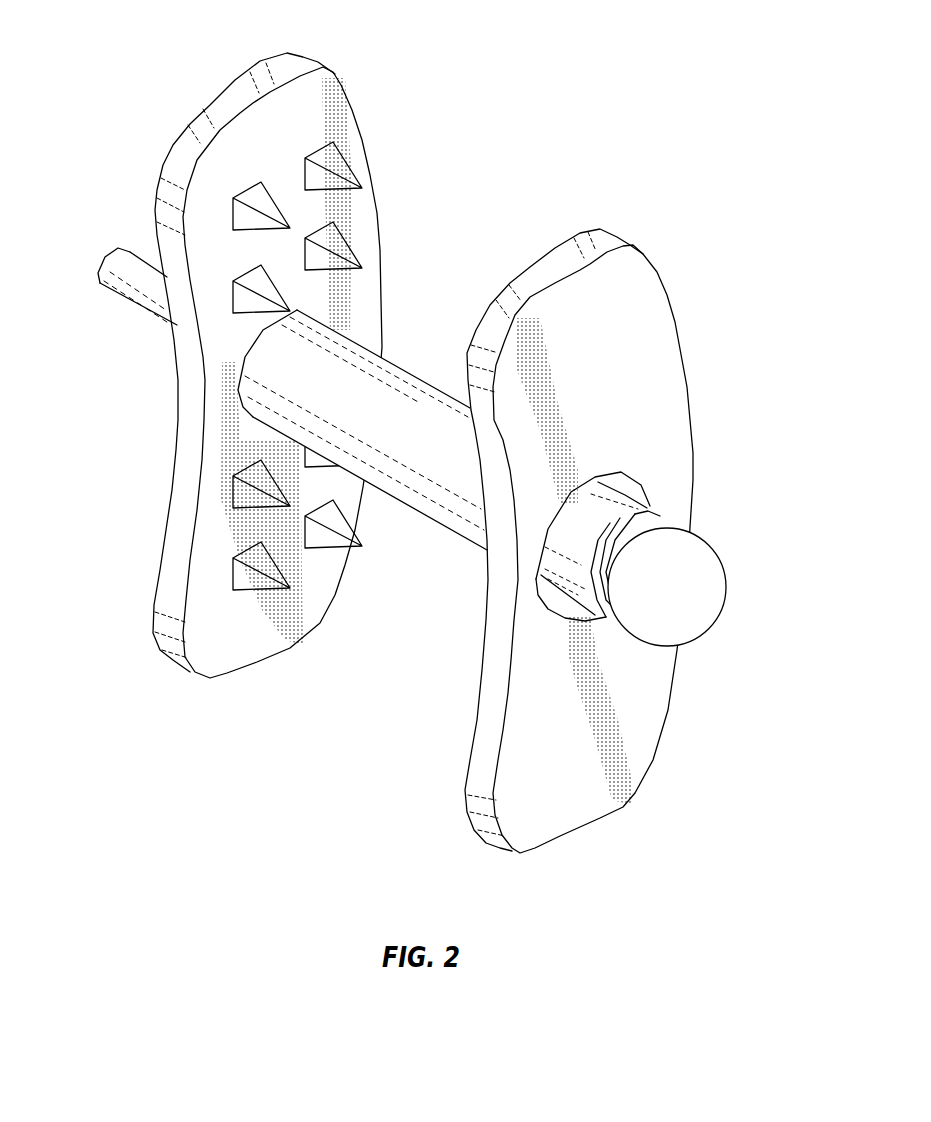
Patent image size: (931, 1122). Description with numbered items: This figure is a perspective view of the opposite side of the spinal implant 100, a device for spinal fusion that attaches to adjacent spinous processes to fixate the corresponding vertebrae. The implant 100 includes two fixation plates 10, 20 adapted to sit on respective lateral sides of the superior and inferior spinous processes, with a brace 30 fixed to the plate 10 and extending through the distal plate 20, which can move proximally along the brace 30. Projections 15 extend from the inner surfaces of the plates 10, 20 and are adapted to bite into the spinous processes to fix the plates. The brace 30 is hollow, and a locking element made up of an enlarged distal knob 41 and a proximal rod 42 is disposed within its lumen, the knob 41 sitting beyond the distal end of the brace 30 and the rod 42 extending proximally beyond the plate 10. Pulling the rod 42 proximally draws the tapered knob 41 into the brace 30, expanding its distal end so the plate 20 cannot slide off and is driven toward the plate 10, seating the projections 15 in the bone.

The spinal implant 100 is at (426, 453).
The fixation plate 10 is at (180, 562).
The fixation plate 20 is at (635, 720).
The brace 30 is at (417, 413).
The projections 15 is at (332, 168).
The enlarged distal knob 41 is at (683, 577).
The proximal rod 42 is at (142, 283).